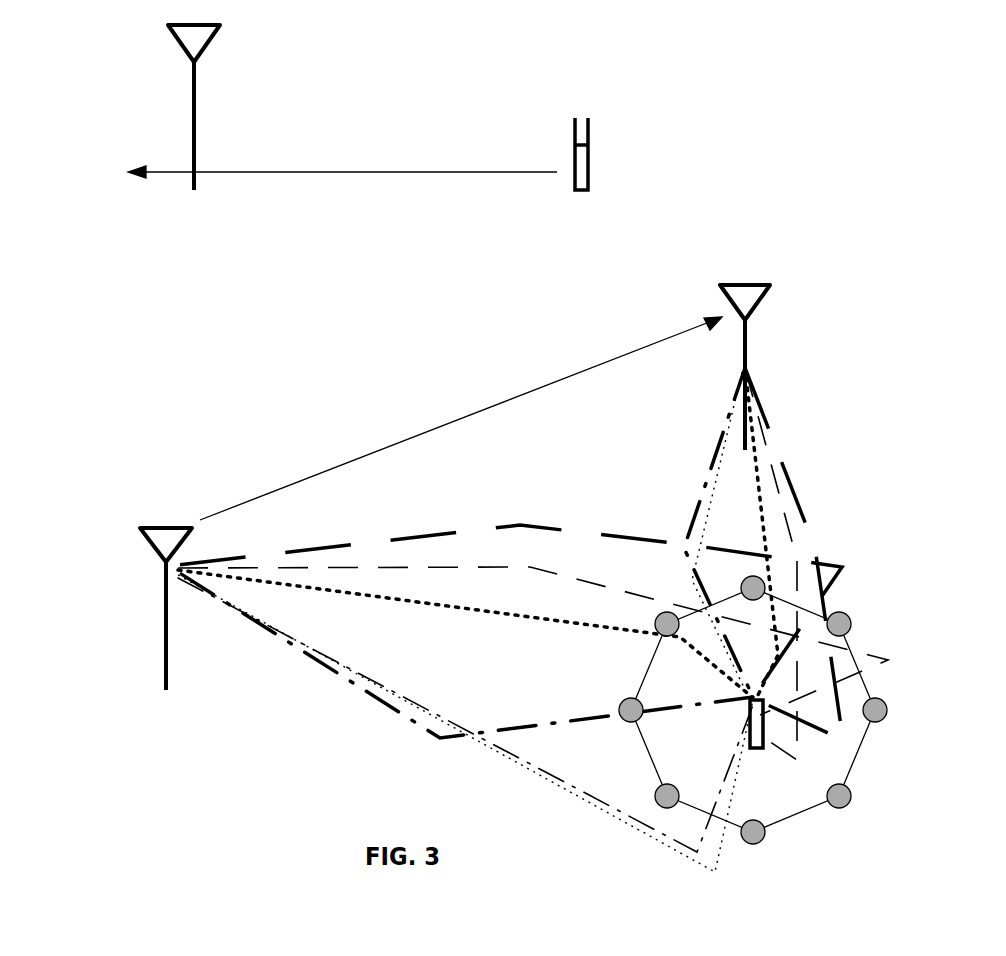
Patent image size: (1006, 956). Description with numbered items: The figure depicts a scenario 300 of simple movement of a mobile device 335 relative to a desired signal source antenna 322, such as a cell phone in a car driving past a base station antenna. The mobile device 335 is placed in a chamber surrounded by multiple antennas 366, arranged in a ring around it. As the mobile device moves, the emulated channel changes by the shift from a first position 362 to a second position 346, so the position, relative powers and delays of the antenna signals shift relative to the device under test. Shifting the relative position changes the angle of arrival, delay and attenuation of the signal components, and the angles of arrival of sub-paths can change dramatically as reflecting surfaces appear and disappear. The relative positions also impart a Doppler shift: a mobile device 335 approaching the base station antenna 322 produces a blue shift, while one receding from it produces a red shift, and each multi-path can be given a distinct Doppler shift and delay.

The wireless communication system 300 is at (979, 49).
The desired signal source antenna 322 is at (210, 43).
The mobile device 335 is at (593, 158).
The shifted position 346 is at (767, 302).
The initial position 362 is at (158, 525).
The multiple antennas 366 is at (858, 618).